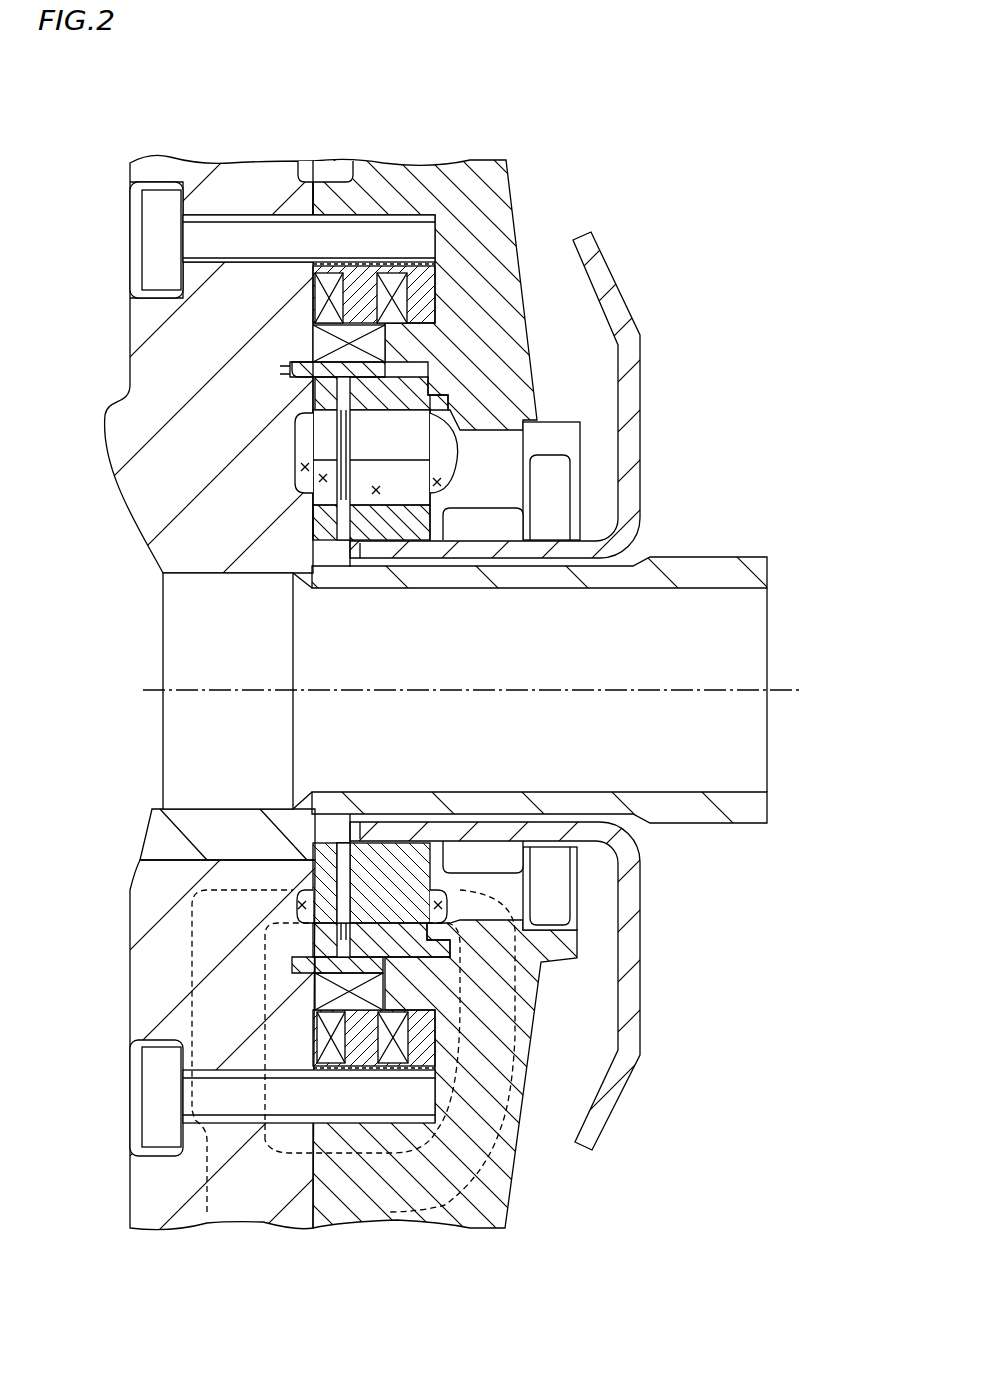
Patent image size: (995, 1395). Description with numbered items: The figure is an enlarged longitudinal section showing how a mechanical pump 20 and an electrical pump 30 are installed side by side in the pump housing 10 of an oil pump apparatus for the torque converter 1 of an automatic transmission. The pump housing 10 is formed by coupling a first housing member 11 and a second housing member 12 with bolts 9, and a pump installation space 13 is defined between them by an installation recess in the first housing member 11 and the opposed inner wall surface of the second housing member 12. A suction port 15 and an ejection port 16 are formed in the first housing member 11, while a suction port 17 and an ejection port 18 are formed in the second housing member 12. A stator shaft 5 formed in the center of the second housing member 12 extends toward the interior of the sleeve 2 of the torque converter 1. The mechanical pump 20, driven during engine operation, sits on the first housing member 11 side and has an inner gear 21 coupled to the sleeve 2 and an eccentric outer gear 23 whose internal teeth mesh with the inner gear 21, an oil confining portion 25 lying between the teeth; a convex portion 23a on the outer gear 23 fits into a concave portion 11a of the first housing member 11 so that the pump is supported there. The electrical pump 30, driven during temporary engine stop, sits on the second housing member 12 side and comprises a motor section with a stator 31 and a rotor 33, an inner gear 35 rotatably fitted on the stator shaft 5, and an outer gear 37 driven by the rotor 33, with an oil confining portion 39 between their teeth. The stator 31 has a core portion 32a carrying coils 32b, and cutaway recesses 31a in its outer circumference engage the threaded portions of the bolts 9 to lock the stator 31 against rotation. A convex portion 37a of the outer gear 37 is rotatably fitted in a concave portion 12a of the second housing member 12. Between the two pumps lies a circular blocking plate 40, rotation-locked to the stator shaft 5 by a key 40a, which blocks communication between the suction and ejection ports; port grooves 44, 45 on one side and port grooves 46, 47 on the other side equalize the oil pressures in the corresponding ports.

The torque converter 1 is at (609, 259).
The sleeve 2 is at (533, 543).
The stator shaft 5 is at (737, 547).
The bolts 9 is at (160, 222).
The pump housing 10 is at (318, 80).
The first housing member 11 is at (358, 150).
The concave portion 11a is at (438, 388).
The second housing member 12 is at (249, 153).
The concave portion 12a is at (292, 383).
The pump installation space 13 is at (412, 303).
The suction port 15 is at (545, 440).
The ejection port 16 is at (537, 965).
The suction port 17 is at (304, 466).
The ejection port 18 is at (340, 912).
The mechanical pump 20 is at (443, 461).
The inner gear 21 is at (408, 510).
The outer gear 23 is at (444, 430).
The convex portion 23a is at (442, 400).
The oil confining portion 25 is at (376, 492).
The electrical pump 30 is at (300, 466).
The stator 31 is at (594, 147).
The cutaway recesses 31a is at (378, 262).
The core portion 32a is at (368, 300).
The coils 32b is at (402, 303).
The rotor 33 is at (318, 340).
The inner gear 35 is at (320, 482).
The outer gear 37 is at (312, 402).
The convex portion 37a is at (305, 365).
The oil confining portion 39 is at (318, 490).
The blocking plate 40 is at (315, 502).
The key 40a is at (340, 537).
The port groove 44 is at (623, 372).
The port groove 45 is at (462, 1022).
The port groove 46 is at (292, 446).
The port groove 47 is at (188, 1058).